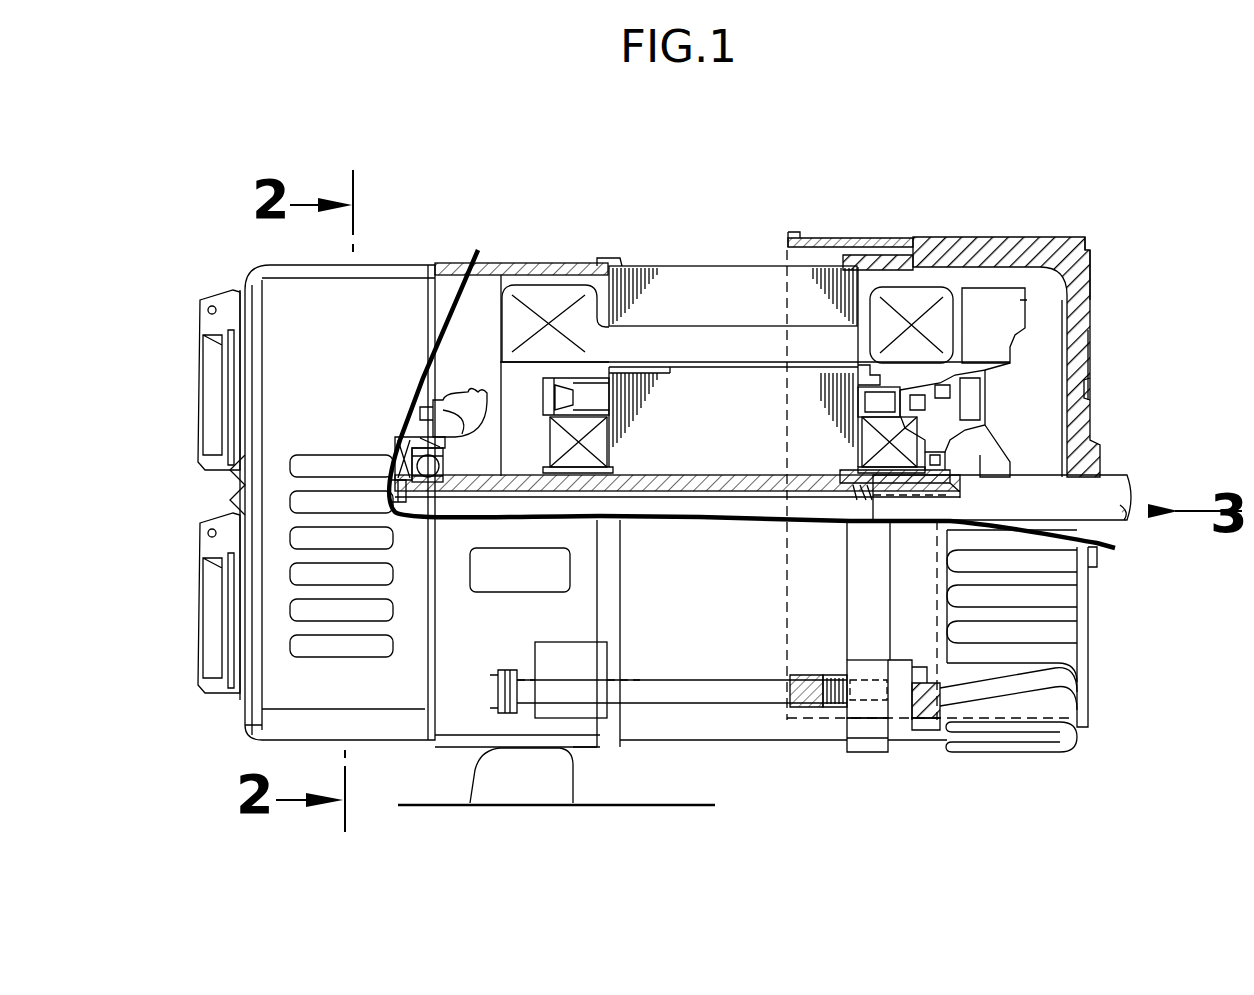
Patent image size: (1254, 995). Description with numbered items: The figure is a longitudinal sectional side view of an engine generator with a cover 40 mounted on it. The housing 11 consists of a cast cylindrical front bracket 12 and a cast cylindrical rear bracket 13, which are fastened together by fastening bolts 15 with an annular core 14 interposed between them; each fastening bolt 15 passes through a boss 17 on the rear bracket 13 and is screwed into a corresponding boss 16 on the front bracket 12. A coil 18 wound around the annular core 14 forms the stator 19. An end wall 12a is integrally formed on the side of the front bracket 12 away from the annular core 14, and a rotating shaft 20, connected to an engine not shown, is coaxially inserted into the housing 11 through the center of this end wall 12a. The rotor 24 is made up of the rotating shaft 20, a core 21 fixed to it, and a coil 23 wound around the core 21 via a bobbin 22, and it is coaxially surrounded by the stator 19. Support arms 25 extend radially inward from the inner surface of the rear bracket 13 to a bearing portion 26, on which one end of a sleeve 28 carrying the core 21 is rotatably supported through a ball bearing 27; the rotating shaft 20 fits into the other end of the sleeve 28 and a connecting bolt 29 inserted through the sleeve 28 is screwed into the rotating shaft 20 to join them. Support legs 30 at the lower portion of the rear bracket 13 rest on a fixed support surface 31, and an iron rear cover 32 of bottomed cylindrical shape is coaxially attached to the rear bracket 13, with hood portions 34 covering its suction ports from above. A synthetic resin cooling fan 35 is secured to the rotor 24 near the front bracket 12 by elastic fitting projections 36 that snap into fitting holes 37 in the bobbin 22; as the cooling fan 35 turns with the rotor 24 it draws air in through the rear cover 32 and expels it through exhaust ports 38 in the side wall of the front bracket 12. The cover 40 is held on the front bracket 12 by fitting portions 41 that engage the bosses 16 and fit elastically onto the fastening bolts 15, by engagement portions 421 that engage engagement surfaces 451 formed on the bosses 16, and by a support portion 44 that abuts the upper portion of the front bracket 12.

The housing 11 is at (609, 250).
The front bracket 12 is at (977, 262).
The end wall 12a is at (1082, 388).
The rear bracket 13 is at (505, 263).
The annular core 14 is at (718, 285).
The fastening bolt 15 is at (695, 697).
The boss 16 is at (875, 667).
The boss 17 is at (580, 667).
The coil 18 is at (543, 300).
The stator 19 is at (482, 308).
The rotating shaft 20 is at (1100, 499).
The core 21 is at (779, 416).
The bobbin 22 is at (880, 366).
The coil 23 is at (595, 443).
The rotor 24 is at (525, 392).
The support arm 25 is at (470, 405).
The bearing portion 26 is at (418, 438).
The ball bearing 27 is at (432, 466).
The sleeve 28 is at (695, 481).
The connecting bolt 29 is at (728, 508).
The support leg 30 is at (545, 773).
The fixed support surface 31 is at (453, 801).
The rear cover 32 is at (270, 277).
The hood portion 34 is at (323, 466).
The cooling fan 35 is at (997, 318).
The fitting projection 36 is at (898, 399).
The fitting hole 37 is at (930, 394).
The exhaust port 38 is at (1058, 630).
The cover 40 is at (862, 238).
The fitting portion 41 is at (810, 660).
The support portion 44 is at (1020, 252).
The engagement surface 451 is at (923, 664).
The engagement portion 421 is at (937, 720).